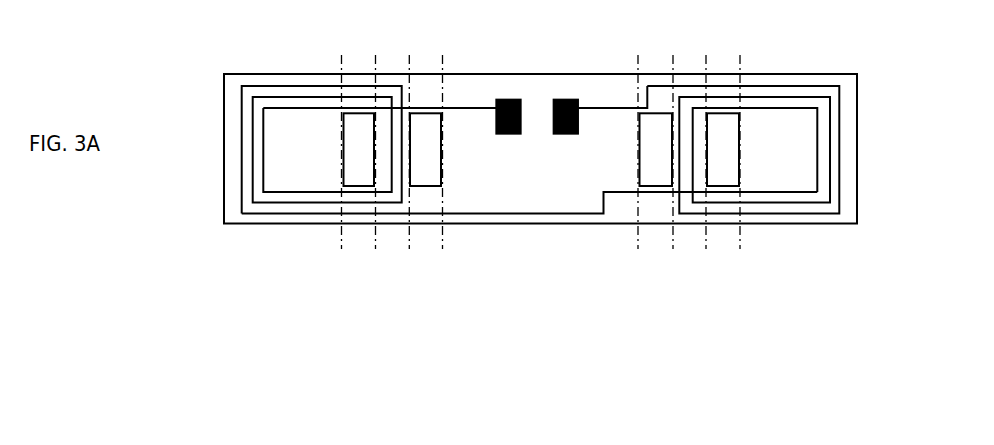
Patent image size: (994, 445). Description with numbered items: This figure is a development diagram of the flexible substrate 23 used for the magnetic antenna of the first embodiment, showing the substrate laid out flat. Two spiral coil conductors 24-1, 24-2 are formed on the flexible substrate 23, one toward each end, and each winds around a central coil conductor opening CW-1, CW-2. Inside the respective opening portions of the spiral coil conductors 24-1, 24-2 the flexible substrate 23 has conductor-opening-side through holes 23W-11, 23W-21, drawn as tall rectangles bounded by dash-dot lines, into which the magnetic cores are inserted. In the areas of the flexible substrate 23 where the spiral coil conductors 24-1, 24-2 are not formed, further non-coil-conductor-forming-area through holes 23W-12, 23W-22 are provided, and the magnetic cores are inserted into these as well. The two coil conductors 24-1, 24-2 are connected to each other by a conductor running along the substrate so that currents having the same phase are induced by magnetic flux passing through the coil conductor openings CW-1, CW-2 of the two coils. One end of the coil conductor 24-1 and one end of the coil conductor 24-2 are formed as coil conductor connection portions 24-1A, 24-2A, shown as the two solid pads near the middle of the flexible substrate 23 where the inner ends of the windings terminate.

The flexible substrate 23 is at (529, 84).
The spiral coil conductor 24-1 is at (283, 97).
The spiral coil conductor 24-2 is at (790, 97).
The coil conductor opening CW-1 is at (287, 139).
The coil conductor opening CW-2 is at (794, 138).
The conductor-opening-side through hole 23W-11 is at (362, 123).
The non-coil-conductor-forming-area through hole 23W-12 is at (421, 123).
The conductor-opening-side through hole 23W-21 is at (721, 123).
The non-coil-conductor-forming-area through hole 23W-22 is at (665, 123).
The coil conductor connection portion 24-1A is at (505, 98).
The coil conductor connection portion 24-2A is at (573, 98).